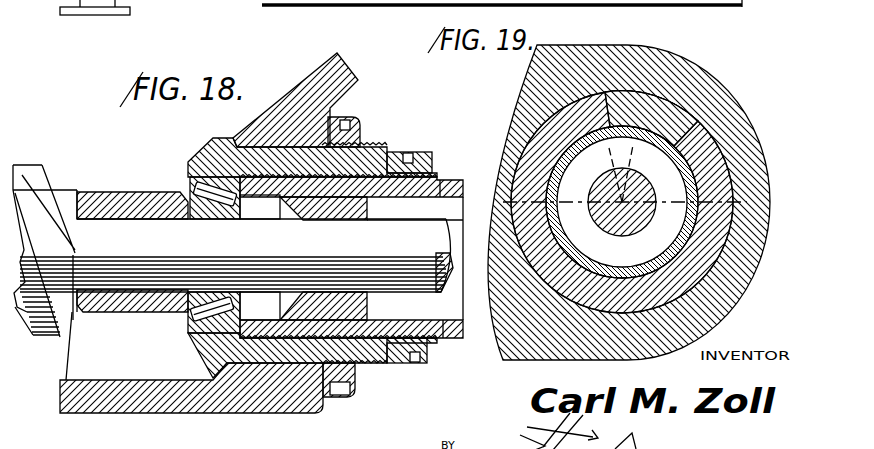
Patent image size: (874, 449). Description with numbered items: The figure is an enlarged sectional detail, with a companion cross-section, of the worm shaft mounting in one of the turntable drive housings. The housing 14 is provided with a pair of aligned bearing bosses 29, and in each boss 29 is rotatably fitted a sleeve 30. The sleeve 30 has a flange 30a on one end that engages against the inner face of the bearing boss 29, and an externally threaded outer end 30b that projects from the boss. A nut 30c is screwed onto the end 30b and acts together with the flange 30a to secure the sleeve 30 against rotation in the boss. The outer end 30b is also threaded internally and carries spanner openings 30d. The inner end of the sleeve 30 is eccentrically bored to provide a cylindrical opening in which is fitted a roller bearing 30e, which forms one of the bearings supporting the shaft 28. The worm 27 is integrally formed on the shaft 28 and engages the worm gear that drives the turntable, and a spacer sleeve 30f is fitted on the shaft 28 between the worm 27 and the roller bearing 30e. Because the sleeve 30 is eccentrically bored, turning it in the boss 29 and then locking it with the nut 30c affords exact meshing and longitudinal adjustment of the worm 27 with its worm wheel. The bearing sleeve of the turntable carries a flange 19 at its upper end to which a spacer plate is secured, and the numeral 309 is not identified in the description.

In FIG. 18, the housing 14 is at (346, 62).
In FIG. 18, the flange 19 is at (270, 218).
In FIG. 18, the worm 27 is at (22, 175).
In FIG. 18, the shaft 28 is at (160, 273).
In FIG. 19, the shaft 28 is at (626, 228).
In FIG. 18, the bearing boss 29 is at (332, 110).
In FIG. 19, the bearing boss 29 is at (698, 83).
In FIG. 18, the sleeve 30 is at (252, 157).
In FIG. 19, the sleeve 30 is at (697, 263).
In FIG. 18, the flange 30a is at (212, 140).
In FIG. 18, the externally threaded outer end 30b is at (372, 148).
In FIG. 18, the nut 30c is at (350, 397).
In FIG. 18, the spanner openings 30d is at (388, 358).
In FIG. 18, the roller bearing 30e is at (192, 349).
In FIG. 18, the spacer sleeve 30f is at (132, 195).
In FIG. 18, the bushing sleeve 309 is at (352, 308).
In FIG. 19, the bushing sleeve 309 is at (672, 146).